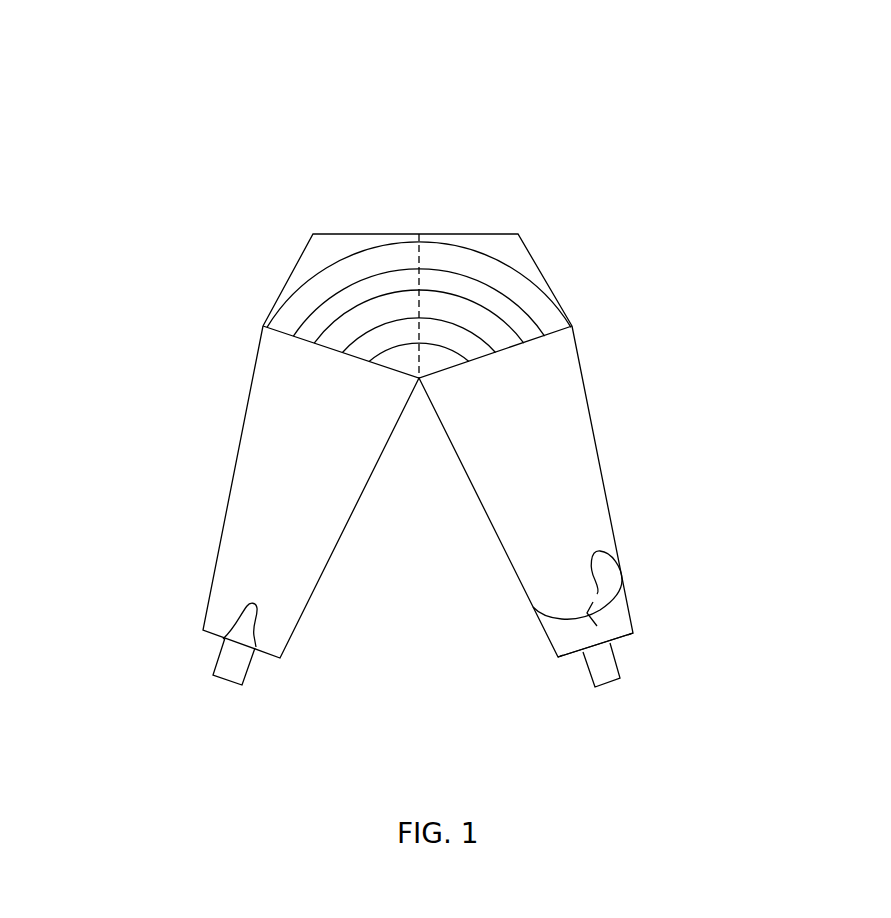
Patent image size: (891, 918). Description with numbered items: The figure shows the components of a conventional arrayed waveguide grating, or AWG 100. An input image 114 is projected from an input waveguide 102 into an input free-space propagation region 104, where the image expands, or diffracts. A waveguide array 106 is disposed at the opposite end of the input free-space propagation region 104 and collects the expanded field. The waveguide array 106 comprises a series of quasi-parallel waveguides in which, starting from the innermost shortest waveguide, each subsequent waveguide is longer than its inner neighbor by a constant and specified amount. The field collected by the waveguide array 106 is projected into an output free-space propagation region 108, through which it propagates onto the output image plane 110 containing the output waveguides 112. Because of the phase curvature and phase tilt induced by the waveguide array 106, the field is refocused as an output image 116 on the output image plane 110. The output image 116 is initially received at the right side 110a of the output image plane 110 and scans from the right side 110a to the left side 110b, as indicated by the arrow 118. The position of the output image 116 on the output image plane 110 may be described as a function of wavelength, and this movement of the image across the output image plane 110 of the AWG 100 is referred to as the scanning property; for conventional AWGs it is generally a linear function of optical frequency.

The arrayed waveguide grating (AWG) 100 is at (790, 115).
The input waveguide 102 is at (215, 675).
The input free-space propagation region 104 is at (262, 472).
The waveguide array 106 is at (317, 253).
The output free-space propagation region 108 is at (588, 450).
The output image plane 110 is at (622, 637).
The right side of the output image plane 110a is at (633, 633).
The left side of the output image plane 110b is at (558, 658).
The output waveguides 112 is at (593, 685).
The input image 114 is at (243, 612).
The output image 116 is at (602, 557).
The arrow 118 is at (538, 617).